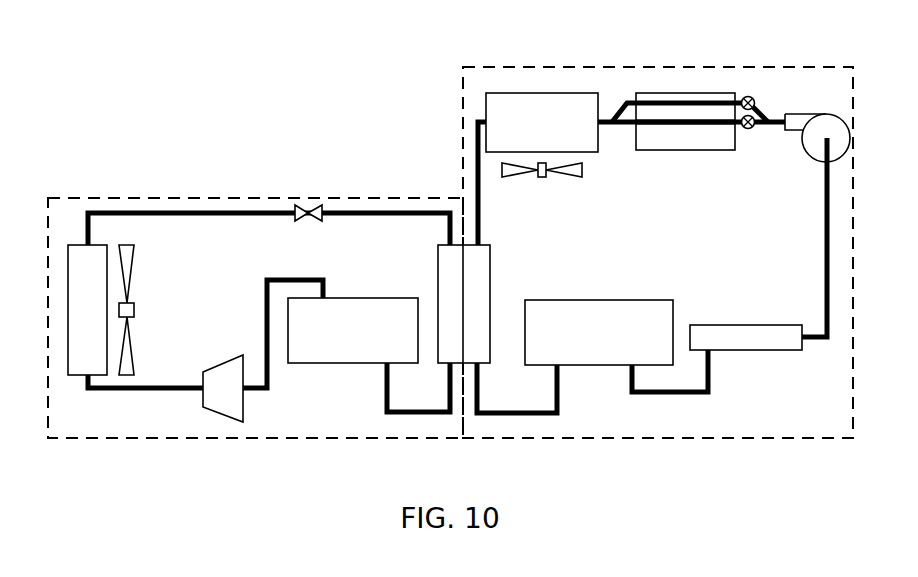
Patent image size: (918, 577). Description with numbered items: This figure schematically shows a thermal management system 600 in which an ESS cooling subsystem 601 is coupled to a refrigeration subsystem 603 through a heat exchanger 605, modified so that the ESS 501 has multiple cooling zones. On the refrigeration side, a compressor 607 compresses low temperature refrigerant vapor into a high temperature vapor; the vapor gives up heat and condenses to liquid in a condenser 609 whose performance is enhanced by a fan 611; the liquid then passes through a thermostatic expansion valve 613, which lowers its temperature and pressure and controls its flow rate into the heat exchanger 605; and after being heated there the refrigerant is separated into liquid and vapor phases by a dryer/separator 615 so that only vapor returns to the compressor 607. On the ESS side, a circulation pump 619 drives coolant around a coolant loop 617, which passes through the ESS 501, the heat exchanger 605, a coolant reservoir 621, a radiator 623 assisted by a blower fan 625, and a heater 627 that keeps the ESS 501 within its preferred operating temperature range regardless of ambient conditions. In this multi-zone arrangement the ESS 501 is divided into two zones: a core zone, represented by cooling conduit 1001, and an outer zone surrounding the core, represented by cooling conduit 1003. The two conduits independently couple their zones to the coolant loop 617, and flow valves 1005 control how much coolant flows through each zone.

The thermal management system 600 is at (258, 105).
The ESS cooling subsystem 601 is at (627, 68).
The refrigeration subsystem 603 is at (178, 199).
The heat exchanger 605 is at (438, 272).
The compressor 607 is at (225, 395).
The condenser 609 is at (73, 375).
The fan 611 is at (134, 310).
The thermostatic expansion valve 613 is at (303, 212).
The dryer/separator 615 is at (385, 298).
The coolant loop 617 is at (827, 258).
The circulation pump 619 is at (822, 135).
The coolant reservoir 621 is at (598, 300).
The radiator 623 is at (508, 93).
The blower fan 625 is at (542, 177).
The heater 627 is at (783, 350).
The ESS 501 is at (668, 150).
The cooling conduit 1001 is at (703, 124).
The cooling conduit 1003 is at (665, 102).
The flow valves 1005 is at (755, 100).